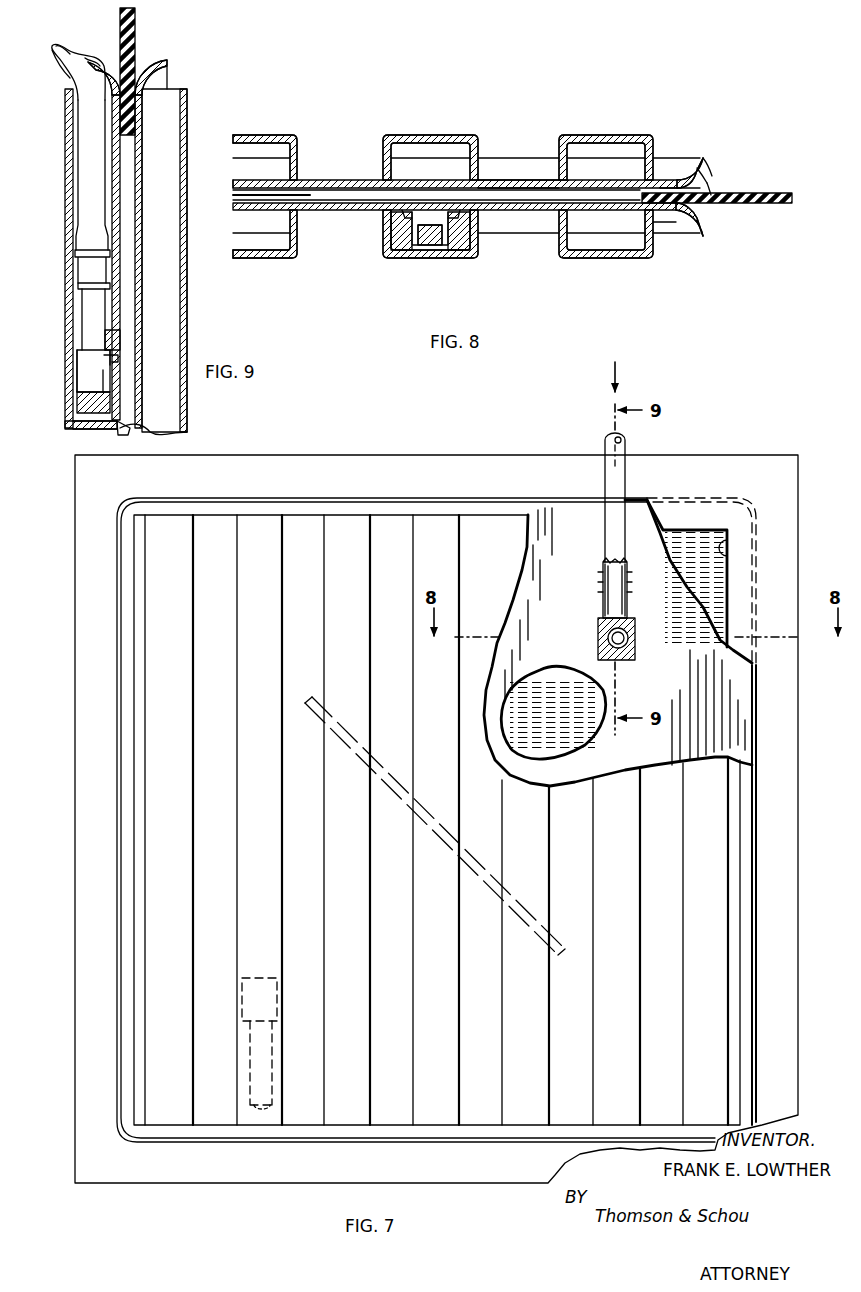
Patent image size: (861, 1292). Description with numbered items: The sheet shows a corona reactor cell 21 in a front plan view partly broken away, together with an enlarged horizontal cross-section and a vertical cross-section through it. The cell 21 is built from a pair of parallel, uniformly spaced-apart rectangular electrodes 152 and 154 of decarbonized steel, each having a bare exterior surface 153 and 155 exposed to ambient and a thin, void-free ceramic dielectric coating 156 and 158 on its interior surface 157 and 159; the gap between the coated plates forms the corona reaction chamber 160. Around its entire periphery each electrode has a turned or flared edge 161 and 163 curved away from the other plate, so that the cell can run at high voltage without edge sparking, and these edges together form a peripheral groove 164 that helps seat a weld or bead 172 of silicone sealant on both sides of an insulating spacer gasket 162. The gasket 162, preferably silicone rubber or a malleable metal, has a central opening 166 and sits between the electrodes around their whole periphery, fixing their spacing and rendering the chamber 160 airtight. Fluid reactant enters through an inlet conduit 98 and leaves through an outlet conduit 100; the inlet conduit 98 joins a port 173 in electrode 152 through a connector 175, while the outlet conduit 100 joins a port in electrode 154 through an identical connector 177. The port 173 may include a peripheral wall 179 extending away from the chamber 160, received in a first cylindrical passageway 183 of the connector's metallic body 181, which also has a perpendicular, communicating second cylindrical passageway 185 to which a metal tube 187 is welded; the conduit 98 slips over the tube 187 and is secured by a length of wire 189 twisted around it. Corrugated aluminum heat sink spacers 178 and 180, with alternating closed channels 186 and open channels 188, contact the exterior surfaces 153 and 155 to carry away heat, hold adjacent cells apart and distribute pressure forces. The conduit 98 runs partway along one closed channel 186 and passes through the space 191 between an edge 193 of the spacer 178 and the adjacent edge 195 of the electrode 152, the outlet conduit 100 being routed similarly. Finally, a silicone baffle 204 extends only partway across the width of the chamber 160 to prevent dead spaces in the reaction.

In FIG. 7, the corona reactor cell 21 is at (386, 452).
In FIG. 9, the inlet conduit 98 is at (86, 120).
In FIG. 7, the inlet conduit 98 is at (606, 524).
In FIG. 7, the outlet conduit 100 is at (272, 1088).
In FIG. 9, the electrode 152 is at (108, 428).
In FIG. 8, the electrode 152 is at (578, 214).
In FIG. 7, the electrode 152 is at (556, 514).
In FIG. 8, the bare exterior surface 153 is at (272, 213).
In FIG. 9, the electrode 154 is at (172, 432).
In FIG. 8, the electrode 154 is at (580, 180).
In FIG. 7, the electrode 154 is at (703, 530).
In FIG. 8, the bare exterior surface 155 is at (270, 190).
In FIG. 8, the dielectric coating 156 is at (703, 236).
In FIG. 8, the interior surface 157 is at (708, 224).
In FIG. 8, the dielectric coating 158 is at (704, 166).
In FIG. 8, the interior surface 159 is at (709, 176).
In FIG. 9, the corona reaction chamber 160 is at (128, 427).
In FIG. 8, the corona reaction chamber 160 is at (362, 194).
In FIG. 7, the corona reaction chamber 160 is at (566, 722).
In FIG. 8, the turned or flared edge 161 is at (688, 222).
In FIG. 7, the turned or flared edge 161 is at (756, 878).
In FIG. 9, the spacer gasket 162 is at (135, 50).
In FIG. 8, the spacer gasket 162 is at (772, 205).
In FIG. 7, the spacer gasket 162 is at (796, 486).
In FIG. 8, the turned or flared edge 163 is at (693, 172).
In FIG. 8, the groove 164 is at (728, 186).
In FIG. 7, the central opening 166 is at (730, 548).
In FIG. 8, the weld or bead 172 is at (712, 190).
In FIG. 9, the port 173 is at (112, 360).
In FIG. 8, the port 173 is at (434, 238).
In FIG. 7, the port 173 is at (626, 648).
In FIG. 9, the connector 175 is at (82, 396).
In FIG. 8, the connector 175 is at (460, 252).
In FIG. 7, the connector 175 is at (600, 640).
In FIG. 7, the connector 177 is at (256, 978).
In FIG. 9, the heat sink spacer 178 is at (66, 421).
In FIG. 8, the heat sink spacer 178 is at (602, 258).
In FIG. 7, the heat sink spacer 178 is at (152, 794).
In FIG. 9, the peripheral wall 179 is at (112, 342).
In FIG. 8, the peripheral wall 179 is at (390, 252).
In FIG. 9, the heat sink spacer 180 is at (188, 408).
In FIG. 8, the heat sink spacer 180 is at (586, 135).
In FIG. 9, the metallic body 181 is at (80, 406).
In FIG. 9, the first cylindrical passageway 183 is at (85, 365).
In FIG. 9, the second cylindrical passageway 185 is at (88, 322).
In FIG. 8, the closed channels 186 is at (471, 157).
In FIG. 9, the tube 187 is at (86, 296).
In FIG. 7, the tube 187 is at (628, 612).
In FIG. 8, the open channels 188 is at (340, 148).
In FIG. 7, the length of wire 189 is at (598, 580).
In FIG. 9, the space 191 is at (60, 52).
In FIG. 9, the edge 193 is at (72, 80).
In FIG. 9, the edge 195 is at (94, 66).
In FIG. 8, the silicone baffle 204 is at (310, 200).
In FIG. 7, the silicone baffle 204 is at (402, 796).